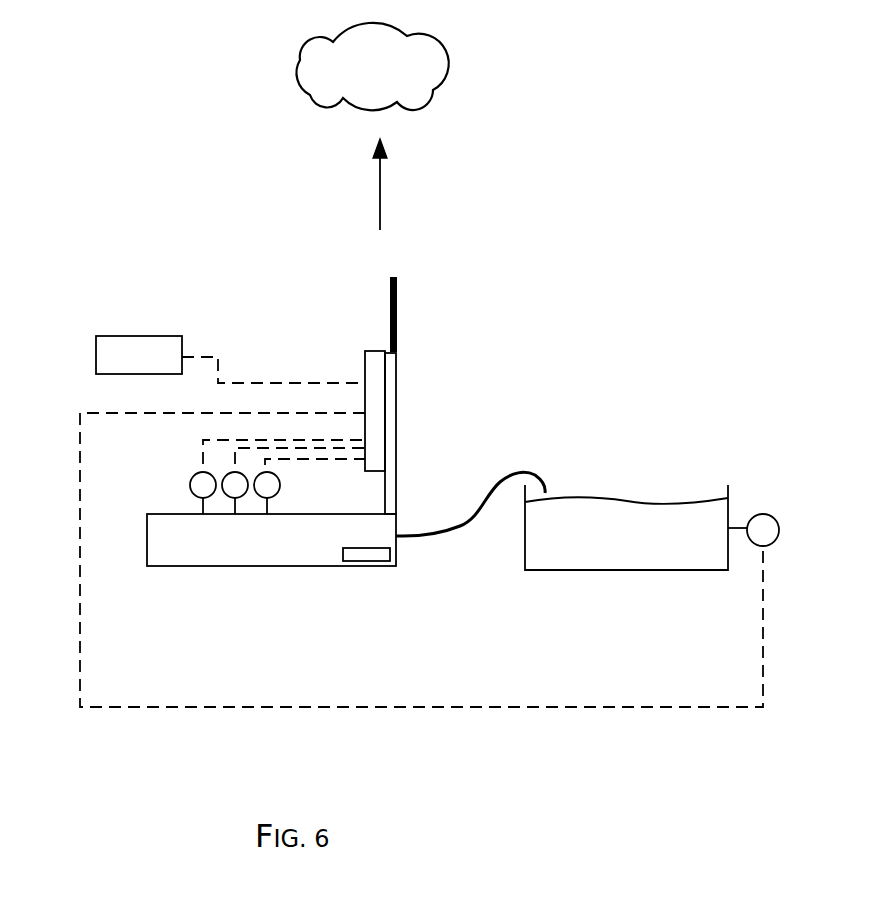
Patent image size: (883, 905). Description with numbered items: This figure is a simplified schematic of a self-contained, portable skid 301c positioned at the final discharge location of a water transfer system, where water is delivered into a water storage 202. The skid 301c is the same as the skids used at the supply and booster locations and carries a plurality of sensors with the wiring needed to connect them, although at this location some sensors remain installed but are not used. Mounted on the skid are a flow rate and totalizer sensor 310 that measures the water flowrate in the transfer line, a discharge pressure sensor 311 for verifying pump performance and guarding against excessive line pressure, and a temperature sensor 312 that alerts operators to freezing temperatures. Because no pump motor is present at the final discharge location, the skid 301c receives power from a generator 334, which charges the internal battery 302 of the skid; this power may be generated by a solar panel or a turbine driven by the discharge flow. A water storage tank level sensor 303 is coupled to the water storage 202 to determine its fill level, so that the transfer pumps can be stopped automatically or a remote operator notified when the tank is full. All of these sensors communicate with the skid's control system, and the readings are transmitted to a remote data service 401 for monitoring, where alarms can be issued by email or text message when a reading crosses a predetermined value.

The remote data service 401 is at (297, 68).
The generator 334 is at (95, 355).
The skid 301c is at (290, 567).
The flow rate and totalizer sensor 310 is at (192, 497).
The discharge pressure sensor 311 is at (227, 497).
The temperature sensor 312 is at (260, 497).
The internal battery 302 is at (370, 561).
The water storage 202 is at (627, 500).
The water storage tank level sensor 303 is at (776, 518).